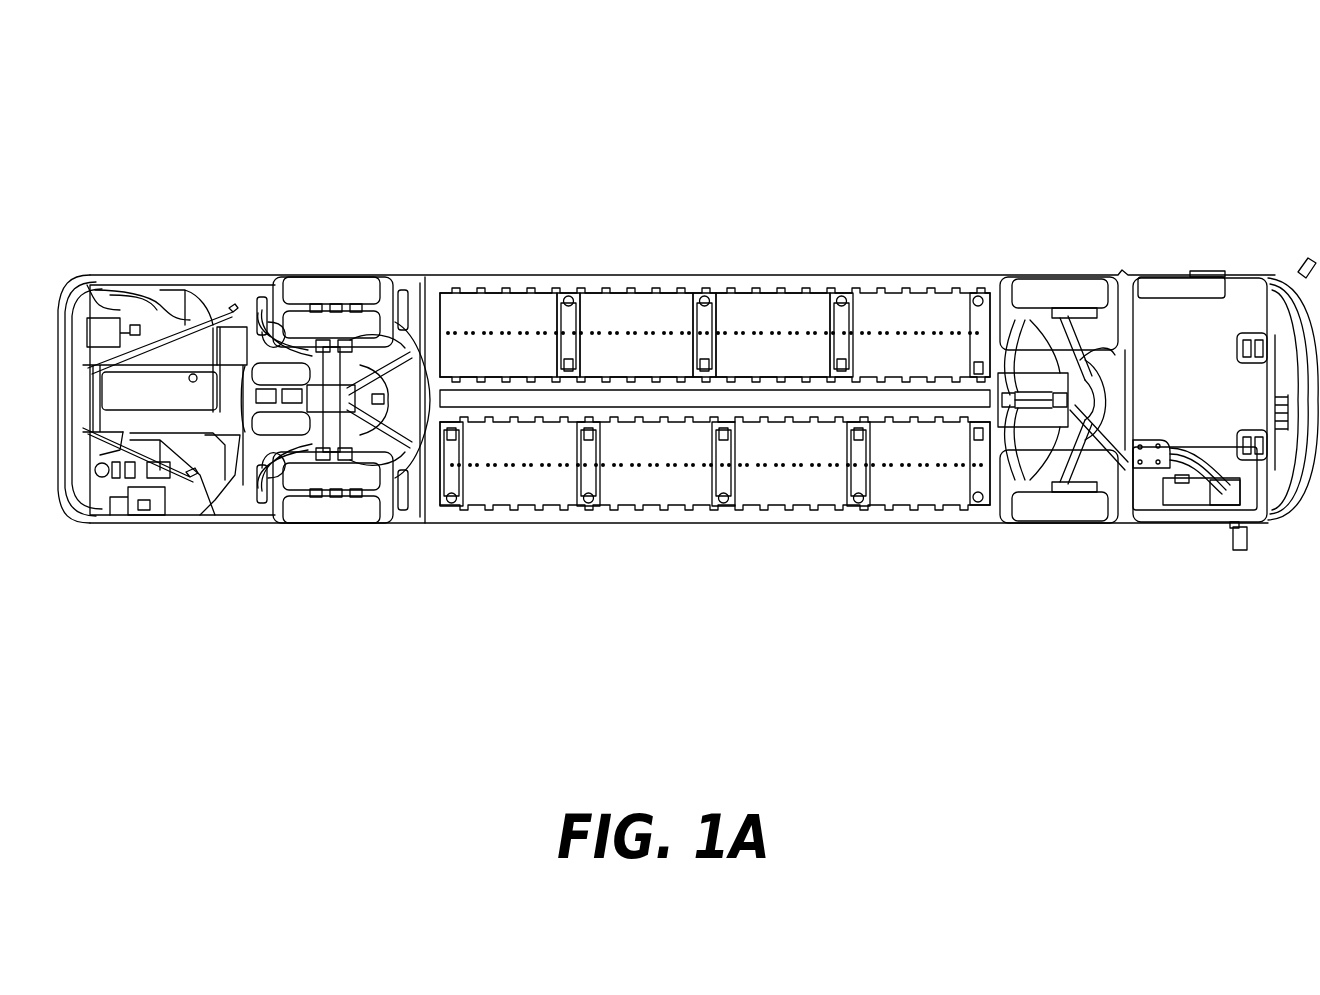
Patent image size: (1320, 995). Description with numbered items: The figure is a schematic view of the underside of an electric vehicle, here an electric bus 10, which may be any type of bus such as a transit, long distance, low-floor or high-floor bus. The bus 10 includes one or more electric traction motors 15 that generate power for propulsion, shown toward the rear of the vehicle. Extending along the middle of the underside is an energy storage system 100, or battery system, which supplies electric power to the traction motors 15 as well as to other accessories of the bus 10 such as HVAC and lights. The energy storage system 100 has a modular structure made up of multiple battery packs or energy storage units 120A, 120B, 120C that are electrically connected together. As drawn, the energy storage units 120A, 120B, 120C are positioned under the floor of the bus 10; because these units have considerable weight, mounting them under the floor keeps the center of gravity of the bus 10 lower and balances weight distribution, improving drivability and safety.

The electric bus 10 is at (294, 136).
The electric traction motor 15 is at (157, 387).
The energy storage system 100 is at (753, 476).
The energy storage unit 120A is at (497, 310).
The energy storage unit 120B is at (632, 310).
The energy storage unit 120C is at (773, 310).